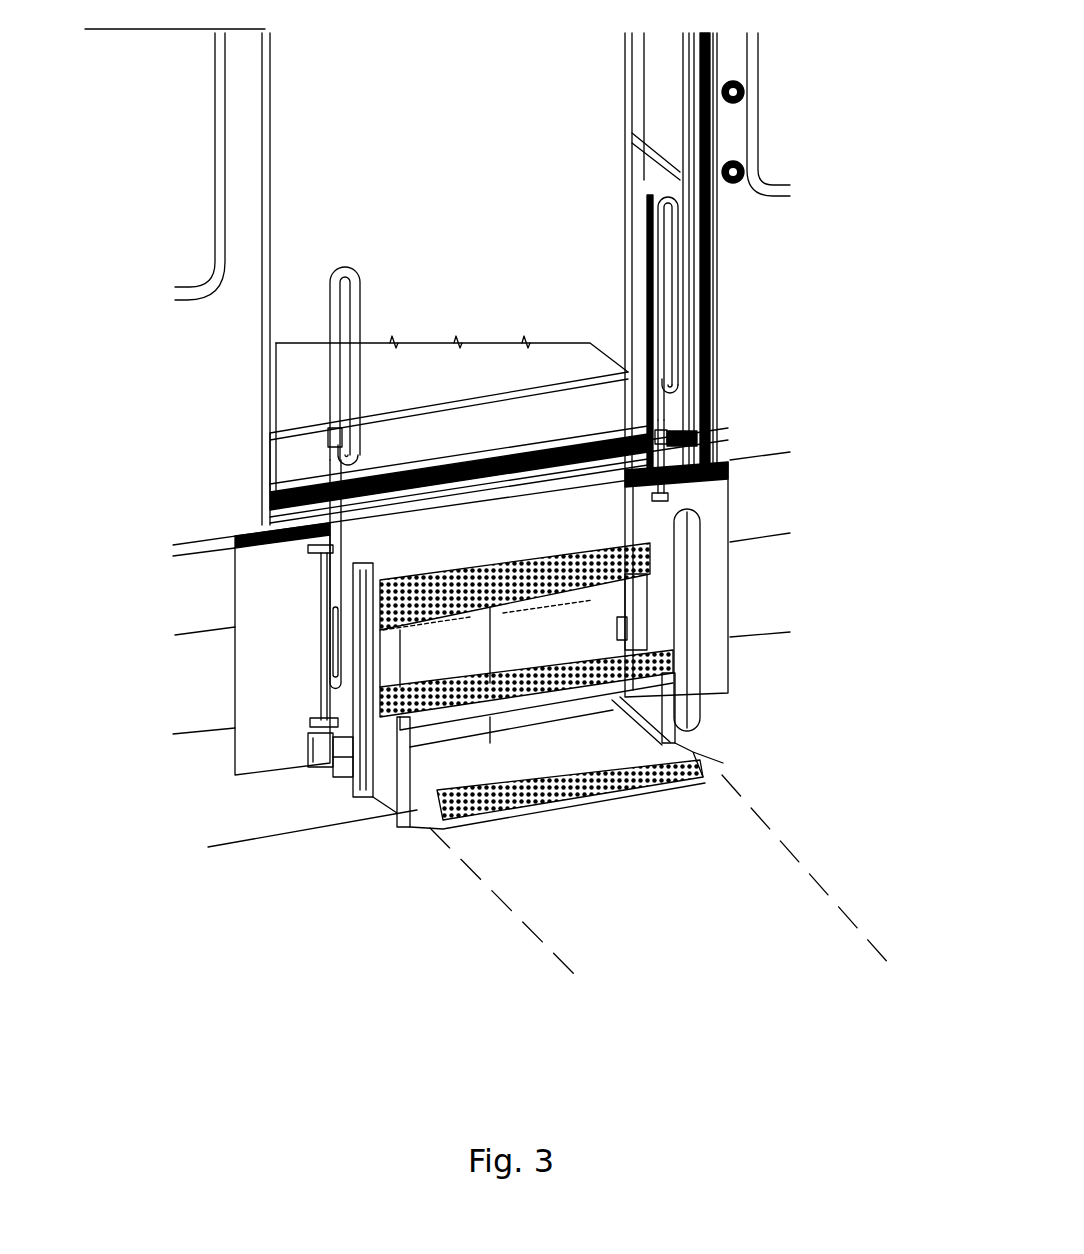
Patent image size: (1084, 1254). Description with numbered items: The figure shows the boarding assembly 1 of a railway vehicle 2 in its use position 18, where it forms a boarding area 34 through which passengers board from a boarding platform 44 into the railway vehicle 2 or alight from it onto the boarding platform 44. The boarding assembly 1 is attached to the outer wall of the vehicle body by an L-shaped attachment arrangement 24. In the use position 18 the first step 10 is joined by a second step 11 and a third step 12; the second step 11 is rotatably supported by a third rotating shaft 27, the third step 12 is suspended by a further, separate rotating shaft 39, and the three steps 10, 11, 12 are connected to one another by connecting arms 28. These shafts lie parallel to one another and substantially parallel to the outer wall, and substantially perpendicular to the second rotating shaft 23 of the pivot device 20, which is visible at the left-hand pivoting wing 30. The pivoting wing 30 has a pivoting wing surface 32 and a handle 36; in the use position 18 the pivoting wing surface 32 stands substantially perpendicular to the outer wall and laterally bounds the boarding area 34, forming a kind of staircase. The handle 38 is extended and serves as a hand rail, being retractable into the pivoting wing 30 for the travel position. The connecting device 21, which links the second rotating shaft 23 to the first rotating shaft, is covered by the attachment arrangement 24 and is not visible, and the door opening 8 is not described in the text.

The boarding assembly 1 is at (375, 933).
The railway vehicle 2 is at (233, 292).
The door opening 8 is at (233, 337).
The first step 10 is at (563, 734).
The second step 11 is at (352, 760).
The third step 12 is at (293, 627).
The use position 18 is at (440, 933).
The pivot device 20 is at (318, 660).
The connecting device 21 is at (330, 752).
The second rotating shaft 23 is at (310, 748).
The attachment arrangement 24 is at (303, 667).
The third rotating shaft 27 is at (628, 632).
The connecting arms 28 is at (647, 598).
The pivoting wing 30 is at (693, 545).
The pivoting wing surface 32 is at (640, 547).
The boarding area 34 is at (678, 875).
The handle 36 is at (695, 652).
The handle 38 is at (670, 380).
The rotating shaft 39 is at (665, 513).
The boarding platform 44 is at (583, 875).